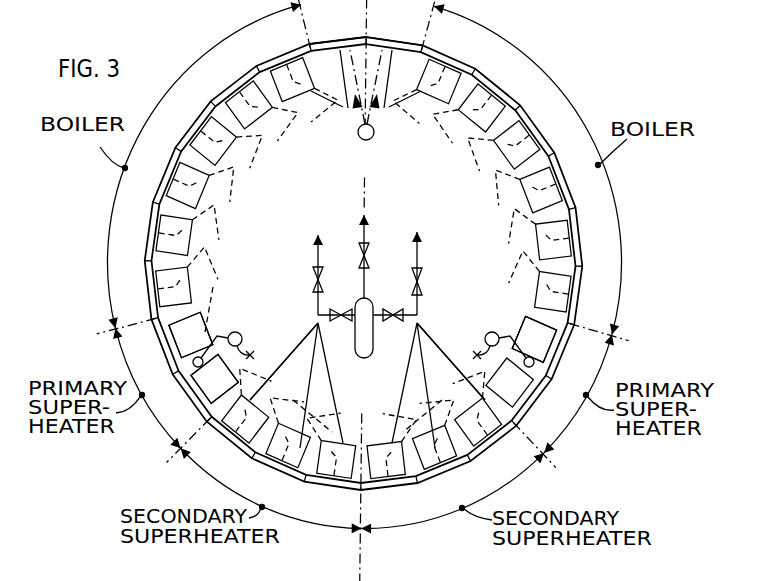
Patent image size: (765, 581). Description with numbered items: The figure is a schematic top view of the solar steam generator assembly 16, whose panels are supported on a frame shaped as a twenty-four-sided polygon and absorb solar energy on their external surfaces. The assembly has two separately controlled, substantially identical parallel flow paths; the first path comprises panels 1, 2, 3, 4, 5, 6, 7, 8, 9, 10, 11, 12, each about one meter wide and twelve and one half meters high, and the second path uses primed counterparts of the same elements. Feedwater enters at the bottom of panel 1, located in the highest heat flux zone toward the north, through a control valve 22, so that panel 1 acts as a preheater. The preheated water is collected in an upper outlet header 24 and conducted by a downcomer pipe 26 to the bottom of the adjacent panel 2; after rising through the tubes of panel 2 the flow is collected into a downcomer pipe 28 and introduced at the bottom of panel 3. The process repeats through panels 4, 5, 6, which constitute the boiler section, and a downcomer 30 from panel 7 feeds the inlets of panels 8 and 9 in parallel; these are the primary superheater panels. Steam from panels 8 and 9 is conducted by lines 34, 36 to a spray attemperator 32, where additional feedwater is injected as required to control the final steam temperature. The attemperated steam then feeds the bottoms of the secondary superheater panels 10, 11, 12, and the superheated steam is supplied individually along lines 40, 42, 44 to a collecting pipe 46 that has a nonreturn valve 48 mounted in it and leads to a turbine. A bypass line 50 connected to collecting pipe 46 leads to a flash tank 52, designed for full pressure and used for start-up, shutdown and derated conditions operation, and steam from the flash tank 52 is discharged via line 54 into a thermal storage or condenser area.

The panel 1 is at (337, 28).
The panel 2 is at (306, 81).
The panel 3 is at (262, 110).
The panel 4 is at (222, 143).
The panel 5 is at (194, 183).
The panel 6 is at (176, 228).
The panel 7 is at (175, 276).
The panel 8 is at (179, 338).
The panel 9 is at (204, 387).
The panel 10 is at (247, 410).
The panel 11 is at (286, 439).
The panel 12 is at (329, 457).
The solar steam generator assembly 16 is at (565, 91).
The control valve 22 is at (364, 140).
The upper outlet header 24 is at (339, 87).
The downcomer pipe 26 is at (332, 102).
The downcomer pipe 28 is at (311, 112).
The downcomer 30 is at (213, 285).
The spray attemperator 32 is at (239, 333).
The line 34 is at (218, 335).
The line 36 is at (257, 344).
The line 40 is at (294, 358).
The line 42 is at (295, 392).
The line 44 is at (330, 358).
The collecting pipe 46 is at (316, 305).
The nonreturn valve 48 is at (314, 272).
The bypass line 50 is at (331, 309).
The flash tank 52 is at (371, 329).
The line 54 is at (368, 277).